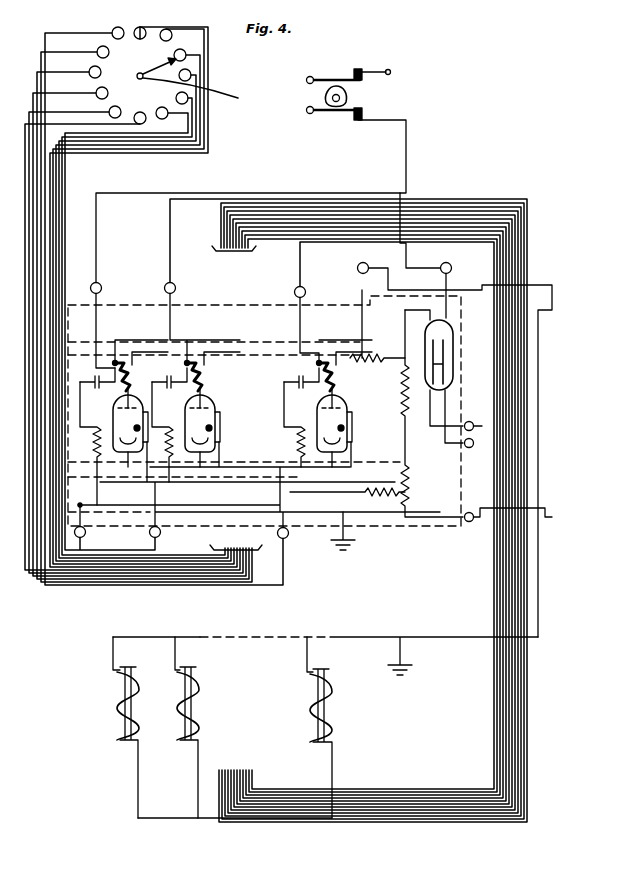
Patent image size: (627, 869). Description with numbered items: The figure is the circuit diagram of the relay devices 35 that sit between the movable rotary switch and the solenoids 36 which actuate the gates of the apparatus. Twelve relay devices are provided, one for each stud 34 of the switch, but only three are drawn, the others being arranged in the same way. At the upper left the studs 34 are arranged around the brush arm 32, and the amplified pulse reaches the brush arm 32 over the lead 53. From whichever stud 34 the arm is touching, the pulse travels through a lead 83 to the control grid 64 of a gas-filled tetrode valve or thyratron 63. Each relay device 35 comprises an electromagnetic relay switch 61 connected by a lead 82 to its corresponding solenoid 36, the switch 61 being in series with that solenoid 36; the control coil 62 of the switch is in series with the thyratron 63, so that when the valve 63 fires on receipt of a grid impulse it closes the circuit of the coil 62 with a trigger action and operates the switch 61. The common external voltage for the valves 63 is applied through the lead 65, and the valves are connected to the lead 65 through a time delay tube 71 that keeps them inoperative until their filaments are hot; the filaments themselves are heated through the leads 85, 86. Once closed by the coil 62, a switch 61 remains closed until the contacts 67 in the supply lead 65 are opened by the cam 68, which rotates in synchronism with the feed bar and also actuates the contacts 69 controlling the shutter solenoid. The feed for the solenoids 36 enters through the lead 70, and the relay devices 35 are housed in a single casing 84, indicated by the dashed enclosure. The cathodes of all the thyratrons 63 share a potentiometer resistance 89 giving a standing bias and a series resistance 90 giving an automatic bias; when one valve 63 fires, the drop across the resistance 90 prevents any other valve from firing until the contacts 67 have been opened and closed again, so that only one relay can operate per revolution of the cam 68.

The brush arm 32 is at (158, 60).
The stud 34 is at (137, 76).
The lead 53 is at (156, 84).
The solenoid 36 is at (120, 696).
The relay device 35 is at (112, 402).
The electromagnetic relay switch 61 is at (113, 362).
The control coil 62 is at (130, 388).
The gas-filled tetrode valve (thyratron) 63 is at (112, 418).
The control grid 64 is at (118, 428).
The supply lead 65 is at (406, 168).
The contacts 67 is at (355, 120).
The cam 68 is at (349, 98).
The contacts 69 is at (355, 71).
The lead 70 is at (456, 290).
The time delay tube 71 is at (423, 350).
The lead 82 is at (168, 260).
The lead 83 is at (86, 537).
The casing 84 is at (426, 530).
The lead 85 is at (476, 420).
The lead 86 is at (473, 448).
The potentiometer resistance 89 is at (411, 497).
The series resistance 90 is at (378, 496).